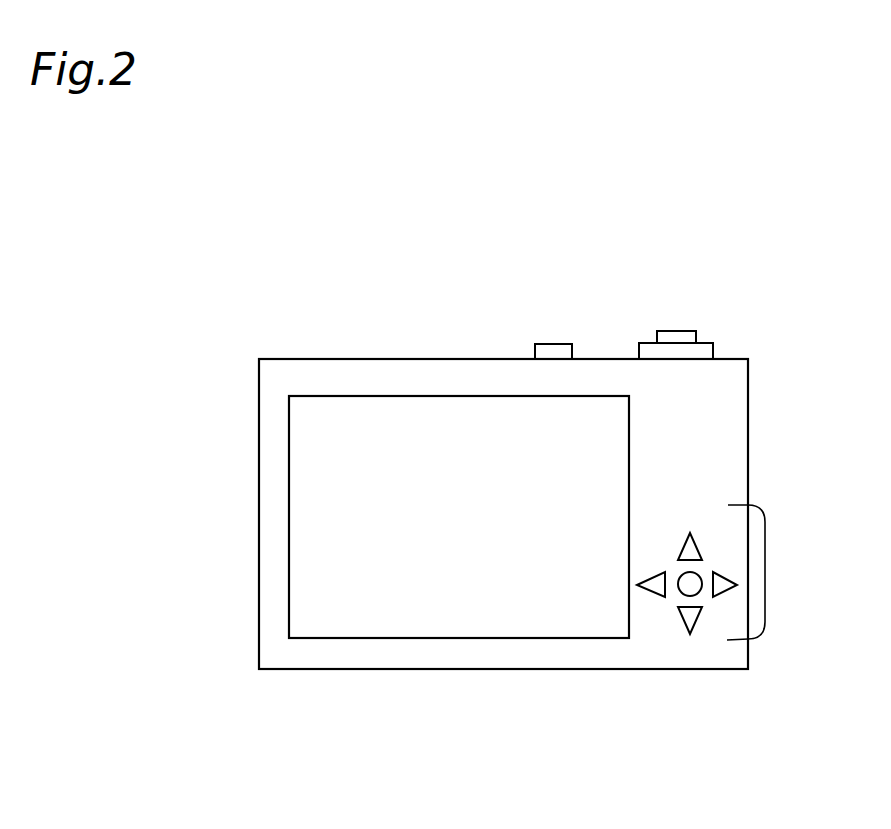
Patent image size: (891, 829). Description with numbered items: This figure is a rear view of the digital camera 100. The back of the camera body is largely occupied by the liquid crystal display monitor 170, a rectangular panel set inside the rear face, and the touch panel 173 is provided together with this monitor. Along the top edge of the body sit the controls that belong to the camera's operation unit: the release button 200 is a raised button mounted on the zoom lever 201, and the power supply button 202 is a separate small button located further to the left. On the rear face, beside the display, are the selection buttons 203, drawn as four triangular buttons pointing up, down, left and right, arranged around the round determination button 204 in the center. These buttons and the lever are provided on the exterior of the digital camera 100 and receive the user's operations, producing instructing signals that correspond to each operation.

The digital camera 100 is at (266, 313).
The liquid crystal display monitor 170 is at (336, 583).
The touch panel 173 is at (370, 493).
The release button 200 is at (663, 339).
The zoom lever 201 is at (709, 350).
The power supply button 202 is at (553, 347).
The selection buttons 203 is at (760, 585).
The determination button 204 is at (690, 584).